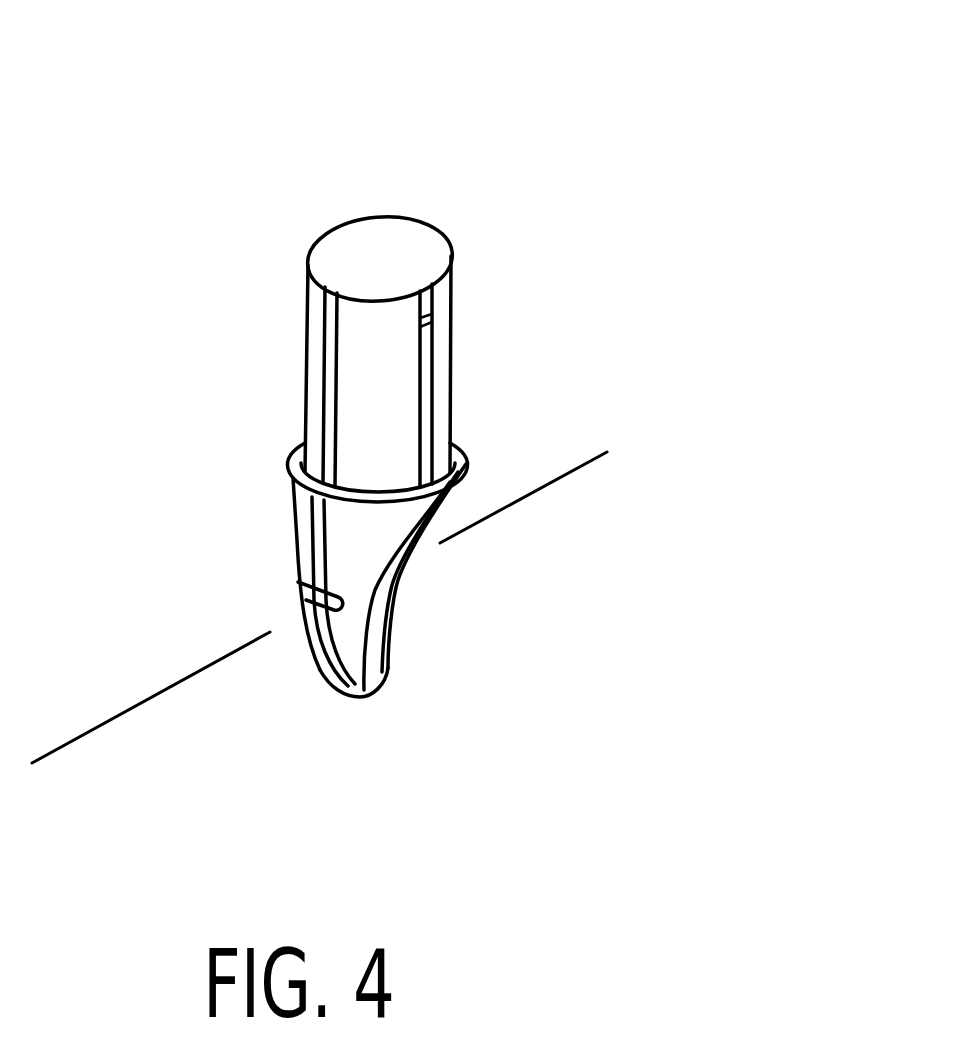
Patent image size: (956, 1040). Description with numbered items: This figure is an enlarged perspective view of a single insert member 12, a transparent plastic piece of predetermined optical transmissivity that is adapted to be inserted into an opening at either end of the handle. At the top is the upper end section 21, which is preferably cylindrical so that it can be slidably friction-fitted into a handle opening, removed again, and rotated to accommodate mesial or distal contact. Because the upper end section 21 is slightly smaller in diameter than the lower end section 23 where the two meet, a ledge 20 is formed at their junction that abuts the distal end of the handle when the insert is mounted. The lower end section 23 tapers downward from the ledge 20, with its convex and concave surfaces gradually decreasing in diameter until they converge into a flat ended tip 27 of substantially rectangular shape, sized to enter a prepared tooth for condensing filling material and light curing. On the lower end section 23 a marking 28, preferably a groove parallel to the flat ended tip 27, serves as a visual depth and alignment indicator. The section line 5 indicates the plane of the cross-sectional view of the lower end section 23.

The insert member 12 is at (237, 182).
The upper end section 21 is at (450, 343).
The ledge 20 is at (290, 442).
The lower end section 23 is at (430, 519).
The flat ended tip 27 is at (393, 667).
The marking 28 is at (303, 585).
The section line 5- 5 is at (542, 515).